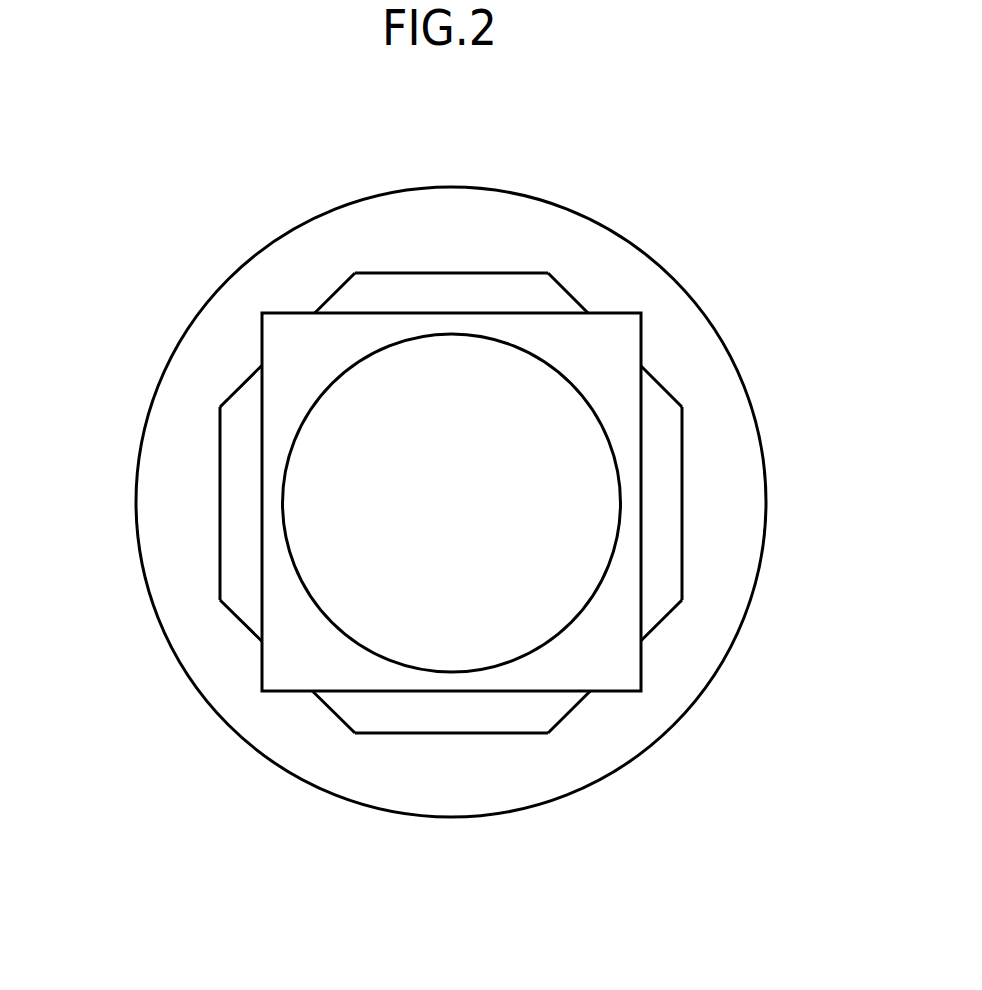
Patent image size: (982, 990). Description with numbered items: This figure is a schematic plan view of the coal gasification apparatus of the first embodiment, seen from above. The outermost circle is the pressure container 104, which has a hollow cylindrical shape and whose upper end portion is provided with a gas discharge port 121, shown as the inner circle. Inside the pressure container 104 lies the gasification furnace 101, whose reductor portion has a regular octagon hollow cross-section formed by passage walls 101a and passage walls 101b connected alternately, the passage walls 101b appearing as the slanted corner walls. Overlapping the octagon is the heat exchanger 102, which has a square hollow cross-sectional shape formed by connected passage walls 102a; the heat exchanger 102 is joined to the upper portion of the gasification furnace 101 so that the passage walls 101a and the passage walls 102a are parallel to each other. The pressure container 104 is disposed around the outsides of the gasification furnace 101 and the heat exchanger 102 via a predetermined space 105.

The gasification furnace 101 is at (461, 509).
The passage wall 101a is at (485, 272).
The passage wall 101b is at (333, 293).
The heat exchanger 102 is at (450, 509).
The passage wall 102a is at (427, 313).
The pressure container 104 is at (216, 292).
The predetermined space 105 is at (297, 757).
The gas discharge port 121 is at (563, 588).